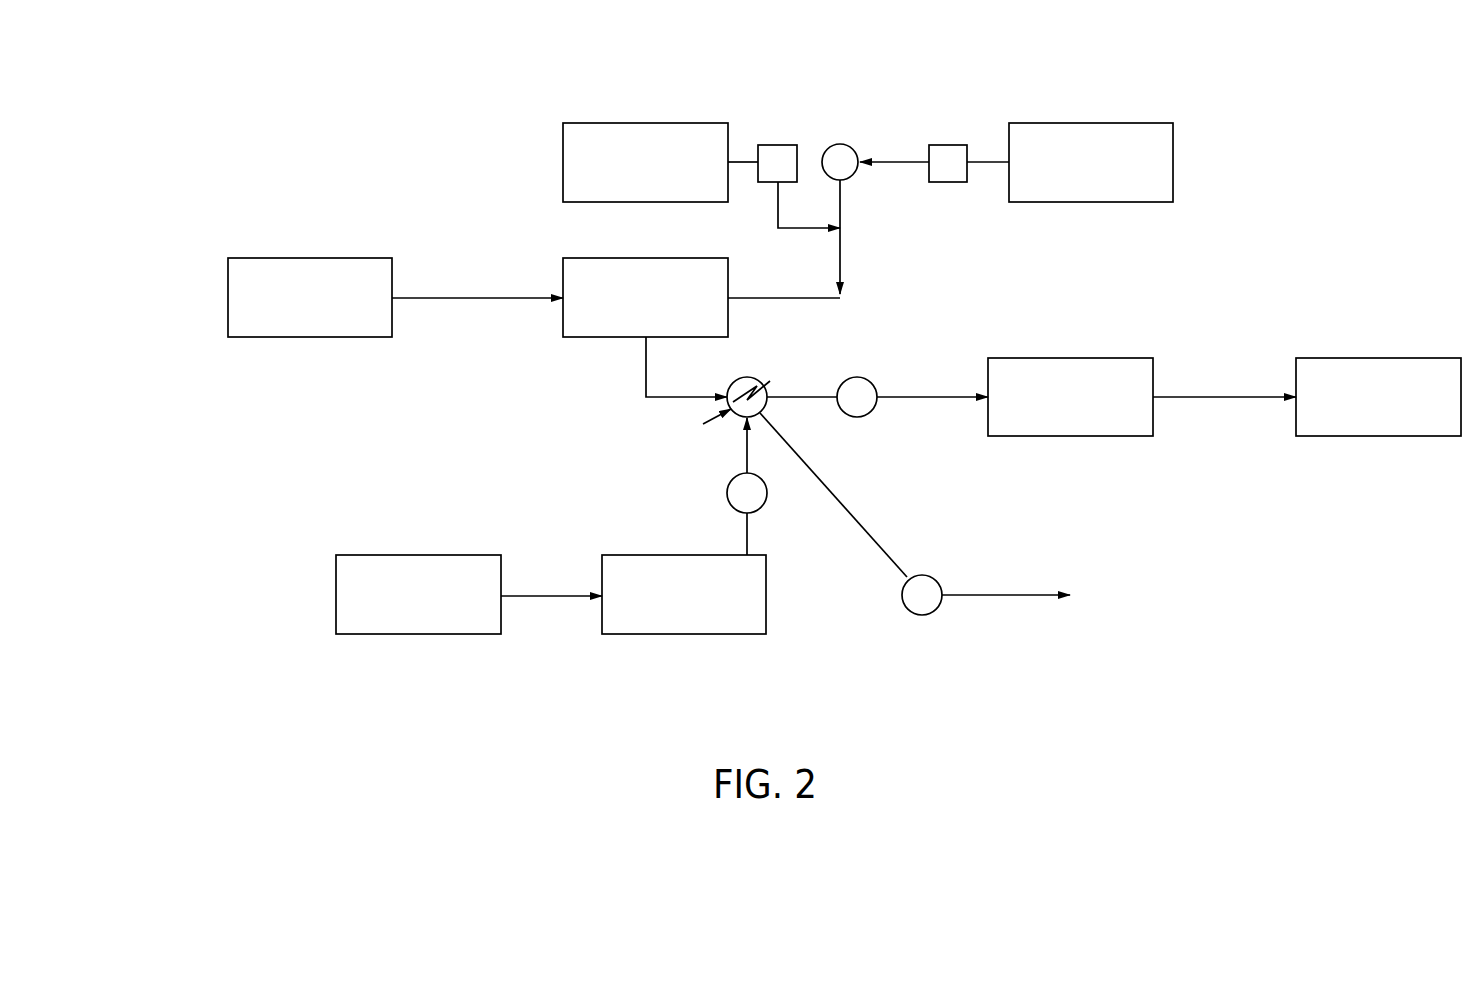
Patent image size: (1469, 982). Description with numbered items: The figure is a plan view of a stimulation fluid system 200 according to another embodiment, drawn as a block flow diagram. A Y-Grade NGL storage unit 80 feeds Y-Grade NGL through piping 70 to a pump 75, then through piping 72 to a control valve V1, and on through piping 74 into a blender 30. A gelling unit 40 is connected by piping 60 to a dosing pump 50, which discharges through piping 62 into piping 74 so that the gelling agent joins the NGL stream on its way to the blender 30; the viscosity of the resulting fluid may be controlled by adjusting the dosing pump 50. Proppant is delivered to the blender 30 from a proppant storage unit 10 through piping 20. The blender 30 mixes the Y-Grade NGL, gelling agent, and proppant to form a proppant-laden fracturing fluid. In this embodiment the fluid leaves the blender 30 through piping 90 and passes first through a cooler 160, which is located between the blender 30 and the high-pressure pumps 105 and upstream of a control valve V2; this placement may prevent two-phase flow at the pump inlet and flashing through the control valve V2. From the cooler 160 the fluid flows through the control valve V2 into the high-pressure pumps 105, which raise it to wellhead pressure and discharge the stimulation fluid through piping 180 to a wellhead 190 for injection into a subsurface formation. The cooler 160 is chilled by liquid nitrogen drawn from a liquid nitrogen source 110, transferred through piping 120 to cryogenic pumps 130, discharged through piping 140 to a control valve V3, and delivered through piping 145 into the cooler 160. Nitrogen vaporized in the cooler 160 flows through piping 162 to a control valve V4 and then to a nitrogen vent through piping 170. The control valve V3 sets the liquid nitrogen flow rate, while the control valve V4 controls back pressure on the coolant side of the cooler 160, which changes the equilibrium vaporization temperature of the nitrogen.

The proppant storage unit 10 is at (330, 258).
The piping 20 is at (461, 301).
The blender 30 is at (661, 258).
The gelling unit 40 is at (670, 123).
The dosing pump 50 is at (780, 145).
The control valve V1 is at (842, 144).
The piping 60 is at (748, 165).
The piping 62 is at (796, 231).
The piping 74 is at (843, 253).
The pump 75 is at (944, 145).
The Y-Grade NGL storage unit 80 is at (1109, 123).
The piping 72 is at (894, 165).
The piping 70 is at (988, 165).
The piping 90 is at (646, 374).
The cooler 160 is at (753, 379).
The control valve V2 is at (862, 378).
The high-pressure pumps 105 is at (1077, 358).
The piping 180 is at (1223, 400).
The wellhead 190 is at (1387, 358).
The piping 145 is at (745, 438).
The control valve V3 is at (767, 497).
The piping 162 is at (862, 525).
The control valve V4 is at (925, 577).
The piping 170 is at (1022, 598).
The piping 140 is at (746, 530).
The liquid nitrogen source 110 is at (401, 555).
The piping 120 is at (548, 600).
The cryogenic pumps 130 is at (688, 635).
The stimulation fluid system 200 is at (205, 495).